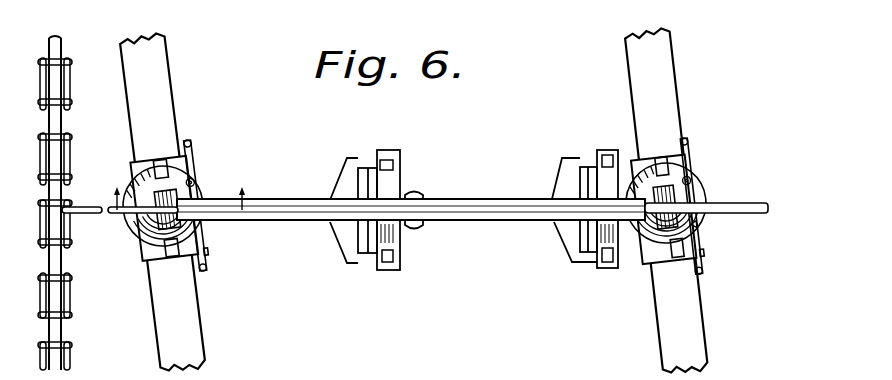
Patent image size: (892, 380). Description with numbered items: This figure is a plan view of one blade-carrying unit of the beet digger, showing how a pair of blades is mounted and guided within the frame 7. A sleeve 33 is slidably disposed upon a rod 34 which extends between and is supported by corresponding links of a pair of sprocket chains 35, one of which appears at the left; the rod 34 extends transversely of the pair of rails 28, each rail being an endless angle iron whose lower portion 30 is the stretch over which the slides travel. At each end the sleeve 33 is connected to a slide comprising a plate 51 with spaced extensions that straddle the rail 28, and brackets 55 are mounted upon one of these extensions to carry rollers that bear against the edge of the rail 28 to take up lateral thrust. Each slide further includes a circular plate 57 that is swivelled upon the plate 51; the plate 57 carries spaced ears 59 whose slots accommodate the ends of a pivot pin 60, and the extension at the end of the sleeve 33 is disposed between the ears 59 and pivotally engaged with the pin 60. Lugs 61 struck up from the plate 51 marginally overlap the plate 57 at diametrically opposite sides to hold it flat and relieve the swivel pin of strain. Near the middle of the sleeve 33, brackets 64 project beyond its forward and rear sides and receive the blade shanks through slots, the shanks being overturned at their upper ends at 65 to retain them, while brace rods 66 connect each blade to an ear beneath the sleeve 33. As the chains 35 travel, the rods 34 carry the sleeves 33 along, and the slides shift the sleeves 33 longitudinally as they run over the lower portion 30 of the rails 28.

The frame 7 is at (178, 186).
The rails 28 is at (212, 307).
The lower portion 30 is at (194, 343).
The sleeve 33 is at (460, 222).
The rod 34 is at (87, 215).
The sprocket chains 35 is at (64, 192).
The plate 51 is at (151, 259).
The brackets 55 is at (208, 253).
The plate 57 is at (141, 226).
The ears 59 is at (135, 175).
The pivot pin 60 is at (195, 179).
The lugs 61 is at (161, 165).
The brackets 64 is at (396, 184).
The overturned upper ends 65 is at (388, 263).
The brace rods 66 is at (336, 199).